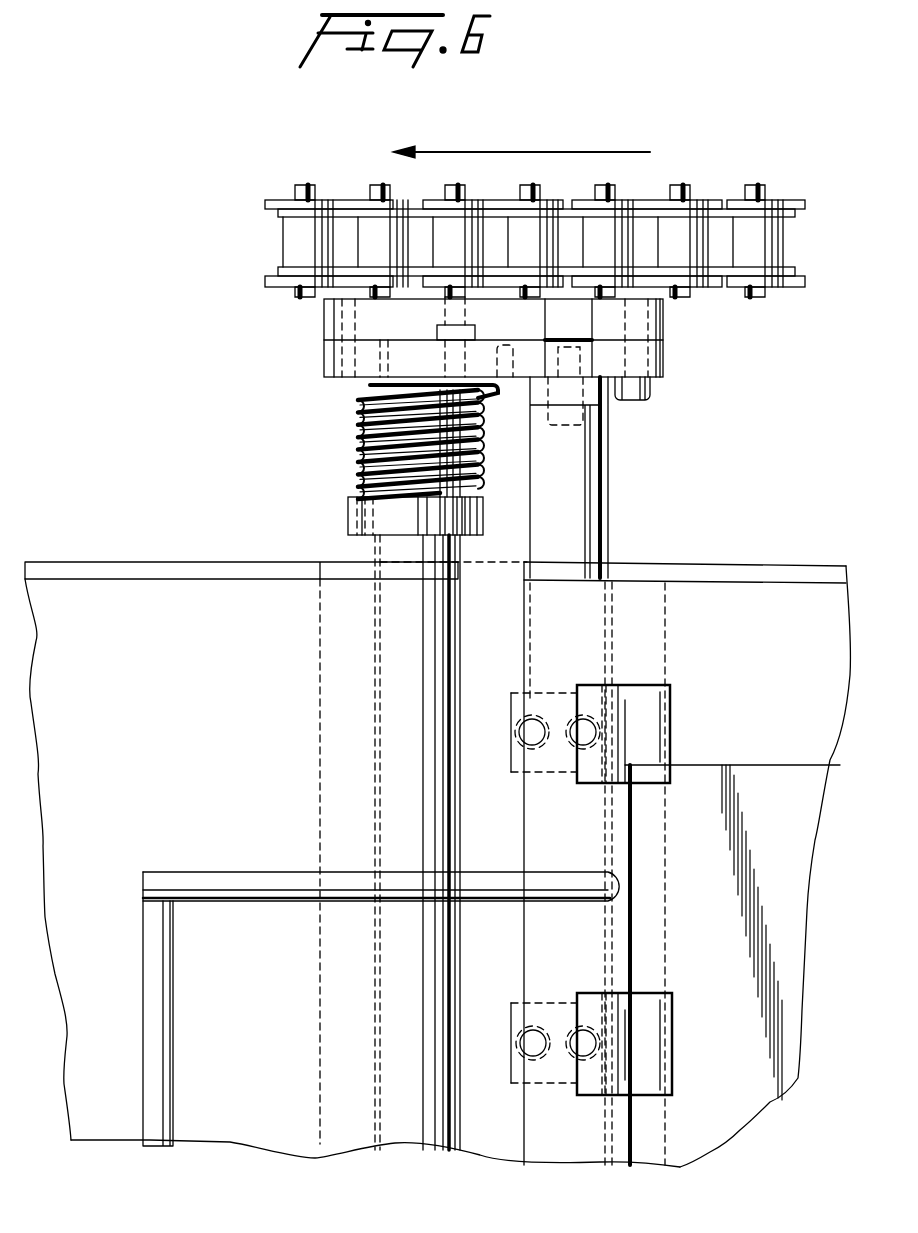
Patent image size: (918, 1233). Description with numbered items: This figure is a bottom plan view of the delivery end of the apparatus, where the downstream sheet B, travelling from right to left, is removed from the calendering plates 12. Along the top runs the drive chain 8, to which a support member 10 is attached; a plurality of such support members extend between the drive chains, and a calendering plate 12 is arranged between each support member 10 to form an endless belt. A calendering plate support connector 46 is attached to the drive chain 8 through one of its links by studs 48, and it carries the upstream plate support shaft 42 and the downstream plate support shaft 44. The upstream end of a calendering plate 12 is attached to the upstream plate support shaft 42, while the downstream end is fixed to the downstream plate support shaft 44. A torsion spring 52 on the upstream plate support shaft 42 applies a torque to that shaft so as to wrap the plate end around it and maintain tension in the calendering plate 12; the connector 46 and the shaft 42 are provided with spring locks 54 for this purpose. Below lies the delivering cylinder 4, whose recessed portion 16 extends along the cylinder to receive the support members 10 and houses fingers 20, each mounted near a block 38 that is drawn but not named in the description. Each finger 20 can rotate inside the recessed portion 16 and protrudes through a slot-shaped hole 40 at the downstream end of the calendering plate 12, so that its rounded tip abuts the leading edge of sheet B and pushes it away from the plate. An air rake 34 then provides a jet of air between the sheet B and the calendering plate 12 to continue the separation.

The drive chain 8 is at (278, 205).
The stud 48 is at (520, 196).
The support member 10 is at (322, 327).
The calendering plate support connector 46 is at (662, 321).
The spring lock 54 is at (525, 372).
The torsion spring 52 is at (360, 440).
The upstream plate support shaft 42 is at (388, 540).
The recessed portion 16 is at (488, 570).
The downstream plate support shaft 44 is at (598, 492).
The delivering cylinder 4 is at (727, 560).
The calendering plate 12 is at (125, 592).
The hole 40 is at (643, 688).
The finger 20 is at (637, 727).
The bearing block 38 is at (570, 742).
The air rake 34 is at (271, 892).
The downstream sheet B is at (727, 1120).